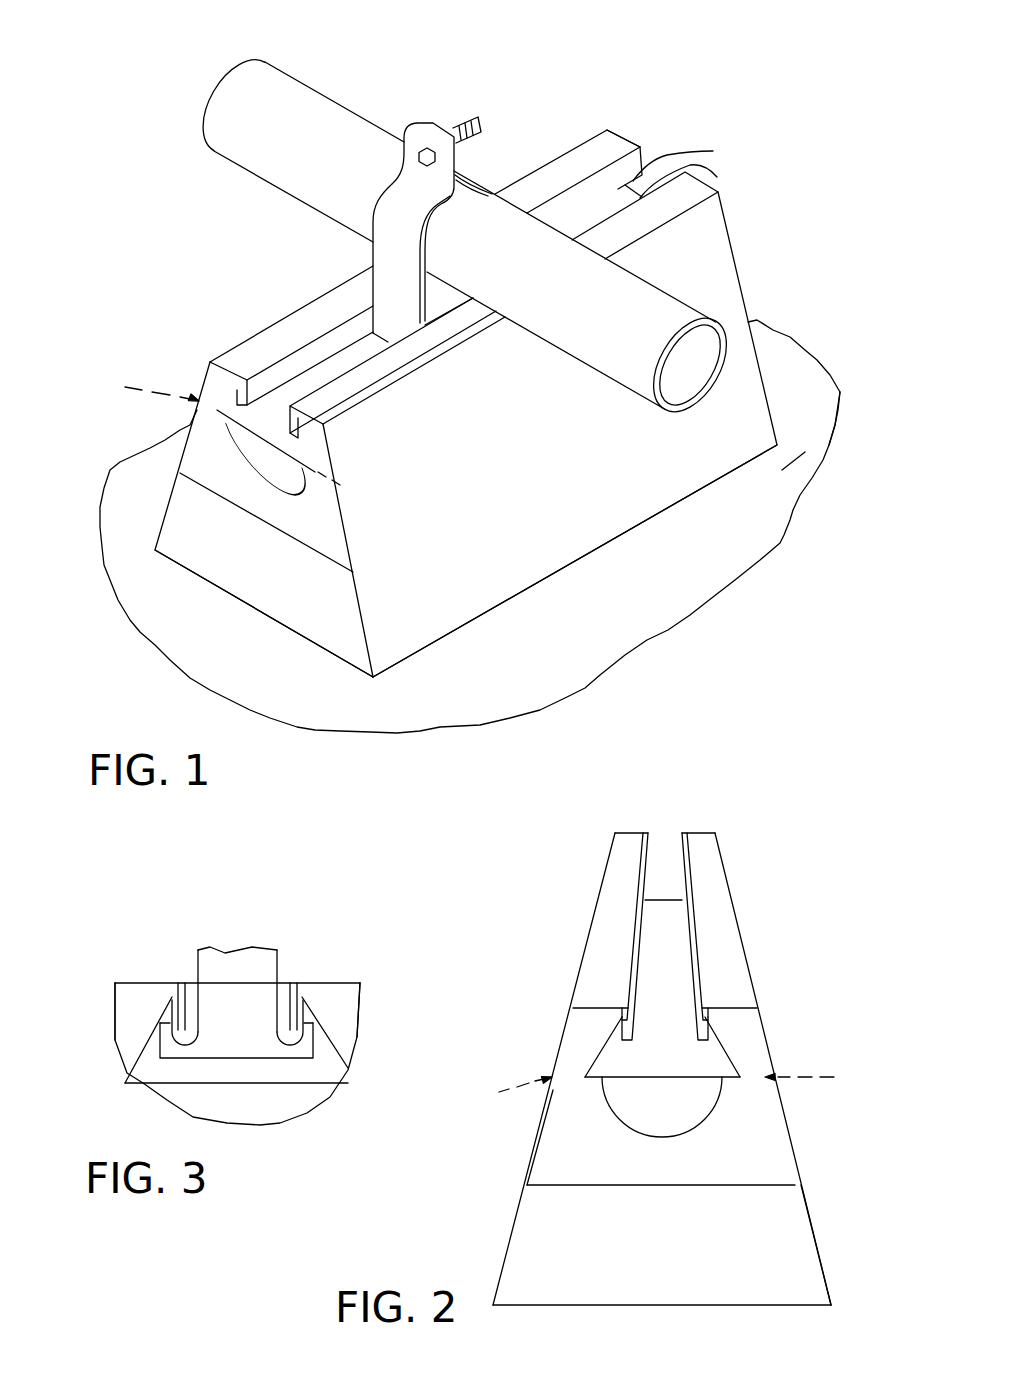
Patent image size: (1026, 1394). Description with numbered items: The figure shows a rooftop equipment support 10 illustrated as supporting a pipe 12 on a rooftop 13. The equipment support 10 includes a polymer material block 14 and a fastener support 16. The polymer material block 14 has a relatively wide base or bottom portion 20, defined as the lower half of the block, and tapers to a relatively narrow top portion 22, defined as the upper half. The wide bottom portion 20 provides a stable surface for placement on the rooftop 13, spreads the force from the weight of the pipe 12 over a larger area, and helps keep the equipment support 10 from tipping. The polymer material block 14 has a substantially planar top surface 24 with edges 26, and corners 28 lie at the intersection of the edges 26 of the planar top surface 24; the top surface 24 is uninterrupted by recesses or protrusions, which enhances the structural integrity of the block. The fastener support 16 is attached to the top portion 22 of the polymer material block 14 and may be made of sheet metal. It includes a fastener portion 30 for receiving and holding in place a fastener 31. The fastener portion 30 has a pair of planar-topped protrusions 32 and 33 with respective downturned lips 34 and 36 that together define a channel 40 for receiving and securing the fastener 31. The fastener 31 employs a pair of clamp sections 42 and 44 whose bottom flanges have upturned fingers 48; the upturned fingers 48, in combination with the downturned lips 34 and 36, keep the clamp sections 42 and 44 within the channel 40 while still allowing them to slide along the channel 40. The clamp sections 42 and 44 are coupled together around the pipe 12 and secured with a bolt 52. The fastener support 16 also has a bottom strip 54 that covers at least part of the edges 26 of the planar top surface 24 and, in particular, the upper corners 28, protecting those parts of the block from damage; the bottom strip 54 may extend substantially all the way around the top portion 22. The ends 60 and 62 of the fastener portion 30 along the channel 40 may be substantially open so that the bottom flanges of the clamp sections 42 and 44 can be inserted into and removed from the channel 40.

In FIG. 1, the rooftop equipment support 10 is at (215, 254).
In FIG. 3, the rooftop equipment support 10 is at (92, 966).
In FIG. 1, the pipe 12 is at (282, 97).
In FIG. 1, the rooftop 13 is at (833, 420).
In FIG. 1, the polymer material block 14 is at (789, 352).
In FIG. 2, the polymer material block 14 is at (834, 1244).
In FIG. 3, the polymer material block 14 is at (260, 1104).
In FIG. 1, the fastener support 16 is at (615, 113).
In FIG. 2, the fastener support 16 is at (551, 915).
In FIG. 3, the fastener support 16 is at (141, 914).
In FIG. 1, the bottom portion 20 is at (140, 545).
In FIG. 2, the bottom portion 20 is at (491, 1243).
In FIG. 1, the top portion 22 is at (155, 470).
In FIG. 2, the top portion 22 is at (504, 1154).
In FIG. 1, the planar top surface 24 is at (693, 160).
In FIG. 2, the planar top surface 24 is at (670, 943).
In FIG. 1, the edges 26 is at (717, 177).
In FIG. 2, the edges 26 is at (742, 1074).
In FIG. 3, the edges 26 is at (317, 1083).
In FIG. 1, the corners 28 is at (214, 427).
In FIG. 2, the corners 28 is at (669, 1086).
In FIG. 1, the fastener portion 30 is at (633, 127).
In FIG. 2, the fastener portion 30 is at (721, 818).
In FIG. 1, the fastener 31 is at (480, 157).
In FIG. 2, the planar-topped protrusion 32 is at (598, 972).
In FIG. 3, the planar-topped protrusion 32 is at (118, 977).
In FIG. 2, the planar-topped protrusion 33 is at (722, 963).
In FIG. 3, the planar-topped protrusion 33 is at (350, 980).
In FIG. 1, the downturned lip 34 is at (252, 376).
In FIG. 2, the downturned lip 34 is at (618, 1027).
In FIG. 3, the downturned lip 34 is at (180, 983).
In FIG. 1, the downturned lip 36 is at (287, 410).
In FIG. 2, the downturned lip 36 is at (709, 1028).
In FIG. 3, the downturned lip 36 is at (295, 1003).
In FIG. 1, the channel 40 is at (338, 356).
In FIG. 2, the channel 40 is at (655, 922).
In FIG. 3, the channel 40 is at (140, 1072).
In FIG. 1, the clamp section 42 is at (397, 191).
In FIG. 3, the clamp section 42 is at (232, 962).
In FIG. 1, the clamp section 44 is at (478, 170).
In FIG. 3, the upturned fingers 48 is at (170, 1027).
In FIG. 1, the bolt 52 is at (456, 118).
In FIG. 1, the bottom strip 54 is at (390, 528).
In FIG. 2, the bottom strip 54 is at (773, 1170).
In FIG. 1, the end 60 is at (250, 493).
In FIG. 2, the end 60 is at (616, 1061).
In FIG. 1, the end 62 is at (665, 144).
In FIG. 2, the end 62 is at (665, 822).